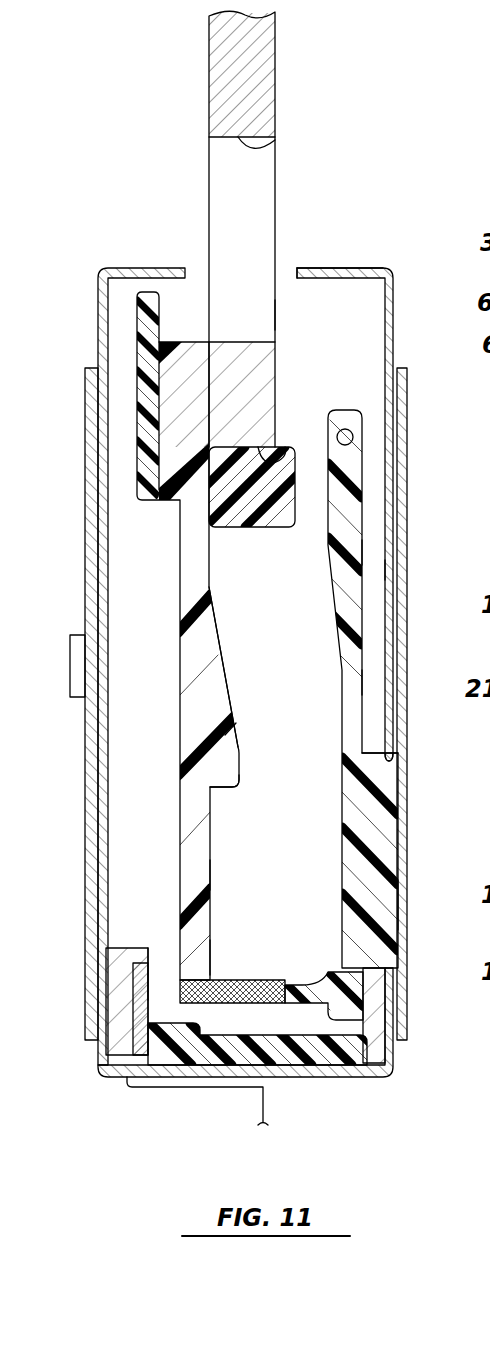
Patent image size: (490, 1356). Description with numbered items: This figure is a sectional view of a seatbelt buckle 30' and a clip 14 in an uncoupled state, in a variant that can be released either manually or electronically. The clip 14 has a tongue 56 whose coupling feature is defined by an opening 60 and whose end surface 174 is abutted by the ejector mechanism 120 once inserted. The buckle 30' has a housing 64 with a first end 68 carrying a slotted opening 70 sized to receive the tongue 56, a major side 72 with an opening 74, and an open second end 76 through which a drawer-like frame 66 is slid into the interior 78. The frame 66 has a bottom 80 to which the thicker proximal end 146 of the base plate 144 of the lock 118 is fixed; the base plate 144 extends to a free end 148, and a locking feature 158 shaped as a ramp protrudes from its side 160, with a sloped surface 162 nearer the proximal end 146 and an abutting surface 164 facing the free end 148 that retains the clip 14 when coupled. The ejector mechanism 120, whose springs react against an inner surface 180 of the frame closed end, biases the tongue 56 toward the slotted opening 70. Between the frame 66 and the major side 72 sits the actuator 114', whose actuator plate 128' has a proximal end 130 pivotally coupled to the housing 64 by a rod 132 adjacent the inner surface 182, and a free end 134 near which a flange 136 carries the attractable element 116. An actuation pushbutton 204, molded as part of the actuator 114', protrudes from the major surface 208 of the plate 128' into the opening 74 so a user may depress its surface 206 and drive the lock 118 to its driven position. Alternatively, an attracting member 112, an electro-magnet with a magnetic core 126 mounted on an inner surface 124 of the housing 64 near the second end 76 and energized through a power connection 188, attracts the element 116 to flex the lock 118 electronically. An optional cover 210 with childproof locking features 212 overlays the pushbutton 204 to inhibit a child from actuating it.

The clip 14 is at (286, 229).
The tongue 56 is at (250, 97).
The opening 60 is at (255, 147).
The seatbelt buckle 30' is at (244, 670).
The housing 64 is at (96, 315).
The frame 66 is at (131, 362).
The first end 68 is at (345, 270).
The slotted opening 70 is at (297, 275).
The major side 72 is at (395, 345).
The opening 74 is at (398, 762).
The second end 76 is at (358, 1078).
The interior 78 is at (322, 327).
The bottom 80 is at (160, 300).
The proximal end 146 is at (190, 368).
The base plate 144 is at (185, 572).
The lock 118 is at (167, 614).
The locking feature 158 is at (227, 662).
The sloped surface 162 is at (238, 698).
The abutting surface 164 is at (238, 790).
The side 160 is at (213, 870).
The free end 148 is at (210, 955).
The attractable element 116 is at (210, 990).
The ejector mechanism 120 is at (255, 491).
The end surface 174 is at (272, 456).
The proximal end 130 is at (396, 664).
The rod 132 is at (342, 430).
The actuation pushbutton 204 is at (390, 830).
The major surface 208 is at (365, 553).
The inner surface 182 is at (384, 570).
The actuator 114' is at (421, 668).
The actuator plate 128' is at (414, 728).
The surface 206 is at (392, 905).
The flange 136 is at (315, 998).
The free end 134 is at (375, 1002).
The inner surface 180 is at (270, 1036).
The cover 210 is at (410, 483).
The childproof locking feature 212 is at (70, 678).
The attracting member 112 is at (106, 968).
The inner surface 124 is at (115, 992).
The magnetic core 126 is at (150, 978).
The power connection 188 is at (178, 1096).